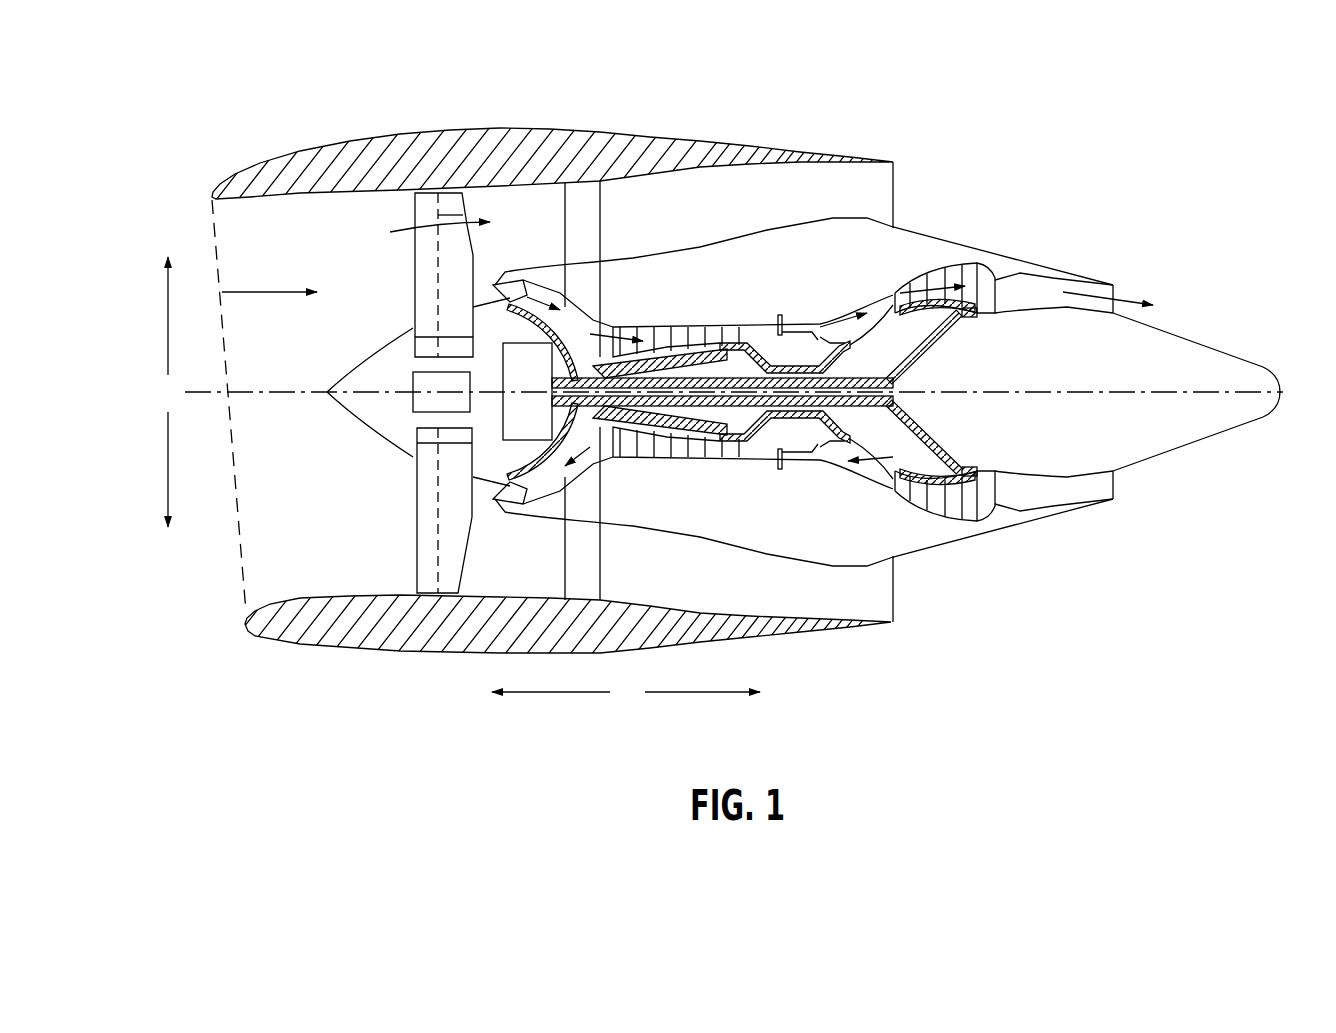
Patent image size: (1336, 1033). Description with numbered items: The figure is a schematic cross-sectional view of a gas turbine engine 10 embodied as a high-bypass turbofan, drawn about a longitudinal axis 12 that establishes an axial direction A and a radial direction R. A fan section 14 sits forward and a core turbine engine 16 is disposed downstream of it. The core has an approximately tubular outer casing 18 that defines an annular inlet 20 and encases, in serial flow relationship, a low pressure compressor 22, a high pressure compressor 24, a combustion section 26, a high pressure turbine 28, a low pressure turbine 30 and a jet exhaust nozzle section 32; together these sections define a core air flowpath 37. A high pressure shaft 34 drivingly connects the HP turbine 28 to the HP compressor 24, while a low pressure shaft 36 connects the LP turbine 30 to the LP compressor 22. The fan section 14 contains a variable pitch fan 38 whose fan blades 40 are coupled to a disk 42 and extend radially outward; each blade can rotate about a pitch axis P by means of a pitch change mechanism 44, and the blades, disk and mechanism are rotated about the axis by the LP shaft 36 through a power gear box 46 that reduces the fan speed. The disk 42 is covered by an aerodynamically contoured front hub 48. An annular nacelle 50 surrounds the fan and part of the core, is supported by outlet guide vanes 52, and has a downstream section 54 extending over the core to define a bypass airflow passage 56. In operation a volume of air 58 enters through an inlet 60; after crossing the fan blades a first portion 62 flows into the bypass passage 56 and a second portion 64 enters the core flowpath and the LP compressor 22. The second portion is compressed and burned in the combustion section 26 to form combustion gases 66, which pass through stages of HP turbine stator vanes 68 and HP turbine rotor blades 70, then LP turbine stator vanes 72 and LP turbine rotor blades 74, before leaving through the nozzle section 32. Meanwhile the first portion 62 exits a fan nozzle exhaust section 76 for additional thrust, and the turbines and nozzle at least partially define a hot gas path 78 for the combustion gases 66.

The gas turbine engine 10 is at (1060, 163).
The longitudinal axis 12 is at (1100, 392).
The fan section 14 is at (370, 210).
The core turbine engine 16 is at (745, 265).
The outer casing 18 is at (708, 541).
The annular inlet 20 is at (510, 493).
The low pressure compressor 22 is at (565, 443).
The high pressure compressor 24 is at (636, 445).
The combustion section 26 is at (795, 460).
The high pressure turbine 28 is at (897, 470).
The low pressure turbine 30 is at (970, 510).
The jet exhaust nozzle section 32 is at (1027, 494).
The high pressure shaft 34 is at (778, 365).
The low pressure shaft 36 is at (853, 376).
The core air flowpath 37 is at (594, 450).
The variable pitch fan 38 is at (381, 448).
The fan blades 40 is at (415, 539).
The disk 42 is at (413, 348).
The pitch change mechanism 44 is at (413, 380).
The power gear box 46 is at (533, 357).
The front hub 48 is at (347, 413).
The nacelle 50 is at (440, 653).
The outlet guide vanes 52 is at (600, 226).
The downstream section 54 is at (815, 149).
The bypass airflow passage 56 is at (794, 216).
The volume of air 58 is at (250, 292).
The inlet 60 is at (243, 560).
The first portion 62 is at (428, 232).
The second portion 64 is at (492, 283).
The combustion gases 66 is at (830, 333).
The HP turbine stator vanes 68 is at (821, 458).
The HP turbine rotor blades 70 is at (835, 455).
The LP turbine stator vanes 72 is at (905, 494).
The LP turbine rotor blades 74 is at (920, 506).
The fan nozzle exhaust section 76 is at (873, 175).
The hot gas path 78 is at (883, 300).
The pitch axis P is at (458, 208).
The radial direction R is at (167, 392).
The axial direction A is at (626, 694).